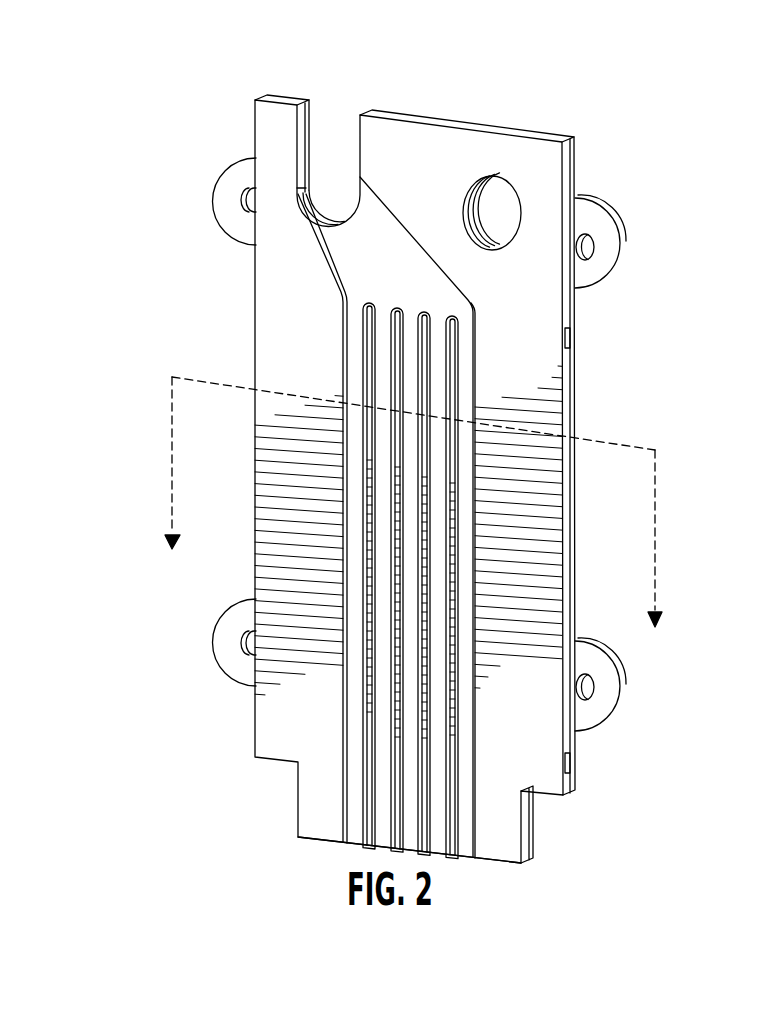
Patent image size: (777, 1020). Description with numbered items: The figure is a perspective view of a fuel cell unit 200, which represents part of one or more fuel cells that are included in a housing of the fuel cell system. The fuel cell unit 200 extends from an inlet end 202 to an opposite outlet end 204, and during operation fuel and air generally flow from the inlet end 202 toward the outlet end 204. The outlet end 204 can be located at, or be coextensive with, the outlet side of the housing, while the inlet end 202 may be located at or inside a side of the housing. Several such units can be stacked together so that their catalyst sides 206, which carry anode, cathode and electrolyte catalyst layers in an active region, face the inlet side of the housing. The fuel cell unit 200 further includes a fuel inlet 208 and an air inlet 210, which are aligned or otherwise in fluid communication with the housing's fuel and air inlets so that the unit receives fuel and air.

The fuel cell unit 200 is at (92, 222).
The inlet end 202 is at (290, 78).
The outlet end 204 is at (305, 858).
The catalyst side 206 is at (535, 836).
The fuel inlet 208 is at (503, 207).
The air inlet 210 is at (333, 122).